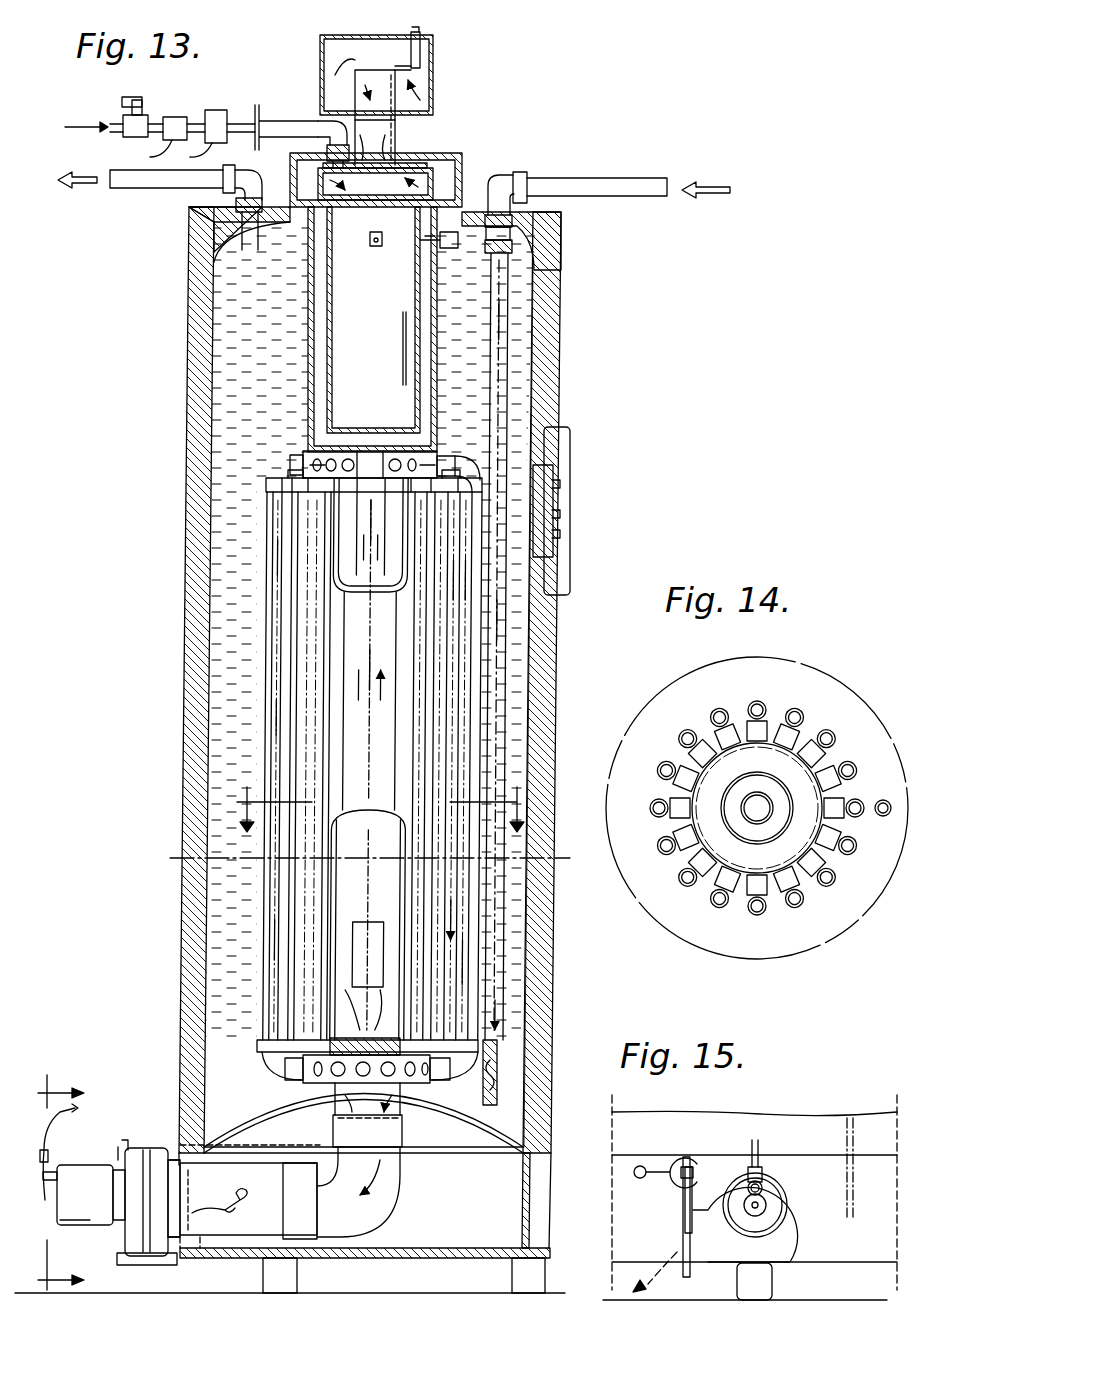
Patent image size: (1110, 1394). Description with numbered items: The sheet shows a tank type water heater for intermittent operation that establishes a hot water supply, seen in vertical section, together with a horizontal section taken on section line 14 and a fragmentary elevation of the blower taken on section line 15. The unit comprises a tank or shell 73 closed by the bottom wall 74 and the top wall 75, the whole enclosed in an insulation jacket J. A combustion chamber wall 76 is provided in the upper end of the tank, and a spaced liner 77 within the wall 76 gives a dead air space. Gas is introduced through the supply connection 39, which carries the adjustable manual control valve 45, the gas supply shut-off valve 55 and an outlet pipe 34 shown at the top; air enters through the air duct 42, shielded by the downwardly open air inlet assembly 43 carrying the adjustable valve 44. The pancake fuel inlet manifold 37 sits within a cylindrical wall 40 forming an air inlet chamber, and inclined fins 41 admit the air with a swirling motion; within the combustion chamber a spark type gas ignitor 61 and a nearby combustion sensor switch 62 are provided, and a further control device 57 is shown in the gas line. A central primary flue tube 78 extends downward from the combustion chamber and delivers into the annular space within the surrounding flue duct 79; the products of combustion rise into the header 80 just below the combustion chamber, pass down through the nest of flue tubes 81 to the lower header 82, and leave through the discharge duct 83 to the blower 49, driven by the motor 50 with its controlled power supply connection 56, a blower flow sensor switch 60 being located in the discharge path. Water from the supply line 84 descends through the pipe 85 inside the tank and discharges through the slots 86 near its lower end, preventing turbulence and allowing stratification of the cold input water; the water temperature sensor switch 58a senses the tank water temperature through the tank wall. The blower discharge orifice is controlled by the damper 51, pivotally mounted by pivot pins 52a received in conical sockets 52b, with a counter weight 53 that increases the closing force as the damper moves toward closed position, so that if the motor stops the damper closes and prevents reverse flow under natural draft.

In FIG. 13, the insulation jacket J is at (540, 993).
In FIG. 13, the hot water outlet pipe 34 is at (148, 190).
In FIG. 13, the fuel inlet manifold 37 is at (405, 165).
In FIG. 13, the gas supply line 39 is at (277, 136).
In FIG. 13, the cylindrical wall 40 is at (455, 180).
In FIG. 13, the inclined fins 41 is at (410, 182).
In FIG. 13, the air duct 42 is at (355, 90).
In FIG. 13, the air inlet assembly 43 is at (440, 108).
In FIG. 13, the adjustable valve 44 is at (392, 66).
In FIG. 13, the adjustable manual control valve 45 is at (136, 100).
In FIG. 13, the blower 49 is at (163, 1147).
In FIG. 15, the blower 49 is at (790, 1240).
In FIG. 13, the motor 50 is at (95, 1165).
In FIG. 15, the motor 50 is at (790, 1208).
In FIG. 13, the damper 51 is at (133, 1265).
In FIG. 15, the damper 51 is at (682, 1223).
In FIG. 15, the pivot pins 52a is at (690, 1162).
In FIG. 15, the conical socket 52b is at (695, 1168).
In FIG. 15, the counter weight 53 is at (634, 1172).
In FIG. 13, the gas supply shut-off valve 55 is at (180, 117).
In FIG. 13, the controlled power supply connection 56 is at (43, 1200).
In FIG. 15, the controlled power supply connection 56 is at (762, 1183).
In FIG. 13, the pressure regulator 57 is at (222, 110).
In FIG. 13, the water temperature sensor switch 58a is at (546, 478).
In FIG. 13, the blower flow sensor switch 60 is at (244, 1204).
In FIG. 13, the gas ignitor 61 is at (376, 247).
In FIG. 13, the combustion sensor switch 62 is at (445, 247).
In FIG. 13, the tank 73 is at (540, 325).
In FIG. 13, the bottom wall 74 is at (462, 1118).
In FIG. 13, the top wall 75 is at (474, 230).
In FIG. 13, the combustion chamber wall 76 is at (308, 298).
In FIG. 13, the liner 77 is at (404, 352).
In FIG. 13, the central primary flue tube 78 is at (348, 512).
In FIG. 14, the central primary flue tube 78 is at (757, 797).
In FIG. 13, the flue duct 79 is at (353, 665).
In FIG. 14, the flue duct 79 is at (735, 846).
In FIG. 13, the header 80 is at (325, 458).
In FIG. 13, the flue tubes 81 is at (276, 590).
In FIG. 14, the flue tubes 81 is at (748, 696).
In FIG. 13, the lower header 82 is at (300, 1090).
In FIG. 13, the discharge duct 83 is at (385, 1213).
In FIG. 13, the supply line 84 is at (622, 178).
In FIG. 13, the pipe 85 is at (505, 375).
In FIG. 14, the pipe 85 is at (880, 816).
In FIG. 13, the slots 86 is at (498, 1073).
In FIG. 13, the section line 14— 14 is at (370, 810).
In FIG. 13, the section line 15— 15 is at (58, 1180).